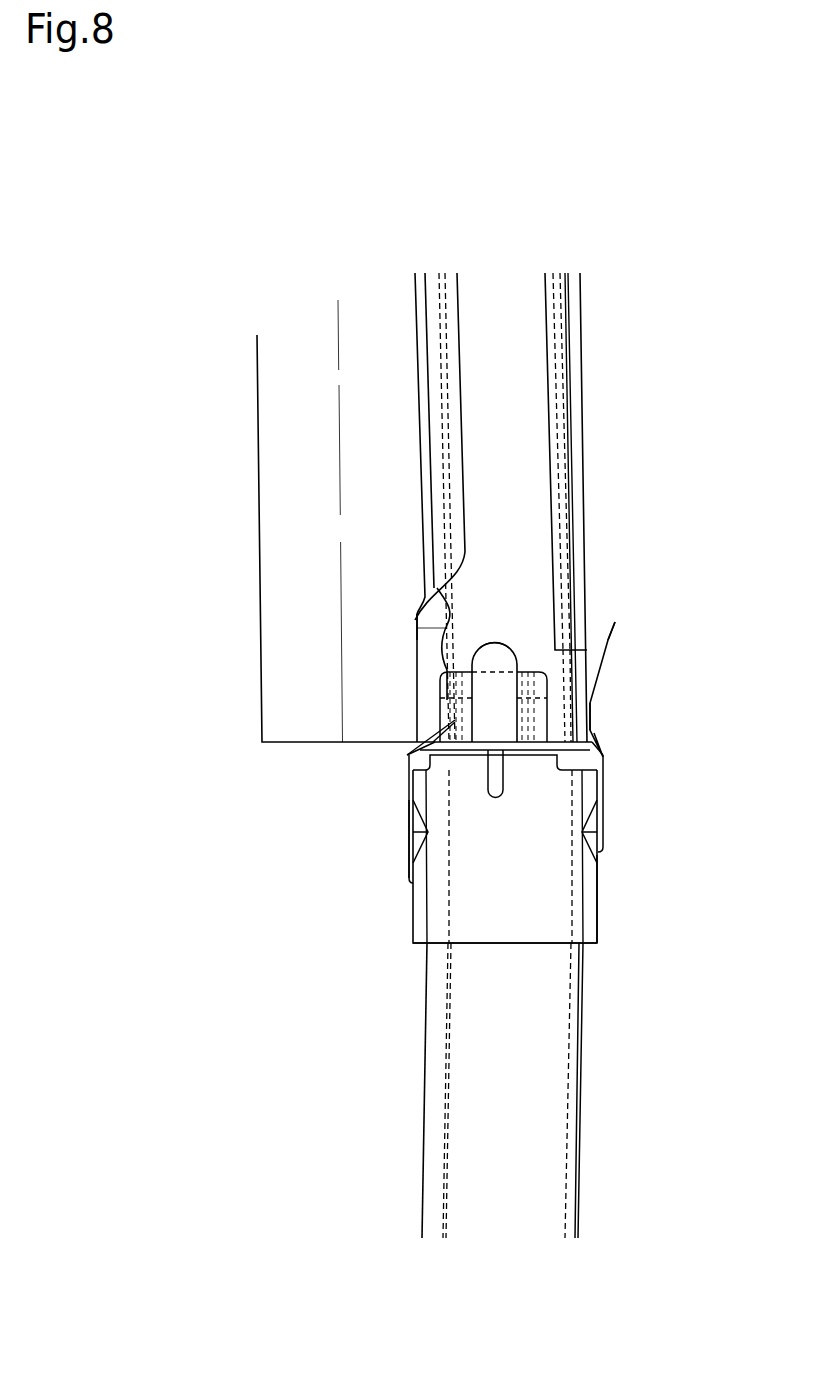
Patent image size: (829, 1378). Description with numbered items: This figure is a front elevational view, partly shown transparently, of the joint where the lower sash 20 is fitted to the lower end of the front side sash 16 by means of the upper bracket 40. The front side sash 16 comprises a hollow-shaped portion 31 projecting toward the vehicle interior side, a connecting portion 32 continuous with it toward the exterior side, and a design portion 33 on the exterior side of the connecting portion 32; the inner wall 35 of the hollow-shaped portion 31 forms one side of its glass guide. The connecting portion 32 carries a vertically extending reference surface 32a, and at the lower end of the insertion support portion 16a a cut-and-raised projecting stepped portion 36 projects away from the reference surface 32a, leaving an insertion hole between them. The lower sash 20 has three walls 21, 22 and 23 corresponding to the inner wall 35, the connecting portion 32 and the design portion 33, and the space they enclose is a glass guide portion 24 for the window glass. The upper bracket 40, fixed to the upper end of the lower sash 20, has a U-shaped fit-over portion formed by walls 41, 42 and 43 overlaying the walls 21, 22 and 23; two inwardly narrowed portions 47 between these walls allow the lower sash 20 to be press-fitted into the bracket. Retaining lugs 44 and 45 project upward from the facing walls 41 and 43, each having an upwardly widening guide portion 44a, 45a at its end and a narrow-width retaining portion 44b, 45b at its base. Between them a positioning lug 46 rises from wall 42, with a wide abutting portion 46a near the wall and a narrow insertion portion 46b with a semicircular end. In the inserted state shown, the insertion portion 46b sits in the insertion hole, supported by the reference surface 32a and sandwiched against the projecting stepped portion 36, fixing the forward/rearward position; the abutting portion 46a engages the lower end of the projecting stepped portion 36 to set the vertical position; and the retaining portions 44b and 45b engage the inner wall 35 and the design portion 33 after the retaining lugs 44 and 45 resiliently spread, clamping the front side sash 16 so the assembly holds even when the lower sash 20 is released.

The front side sash 16 is at (580, 327).
The insertion support portion 16a is at (561, 461).
The lower sash 20 is at (582, 1178).
The wall 21 is at (424, 1117).
The wall 22 is at (507, 1180).
The wall 23 is at (582, 1115).
The glass guide portion 24 is at (530, 1030).
The hollow-shaped portion 31 is at (293, 410).
The connecting portion 32 is at (513, 488).
The reference surface 32a is at (440, 507).
The design portion 33 is at (575, 455).
The inner wall 35 is at (440, 597).
The projecting stepped portion 36 is at (520, 722).
The upper bracket 40 is at (600, 898).
The wall 41 is at (410, 885).
The wall 42 is at (492, 973).
The wall 43 is at (598, 870).
The retaining lug 44 is at (178, 615).
The guide portion 44a is at (445, 702).
The narrow-width retaining portion 44b is at (418, 618).
The retaining lug 45 is at (725, 652).
The guide portion 45a is at (612, 637).
The narrow-width retaining portion 45b is at (590, 712).
The positioning lug 46 is at (650, 538).
The abutting portion 46a is at (478, 745).
The insertion portion 46b is at (500, 653).
The inwardly narrowed portion 47 is at (428, 832).